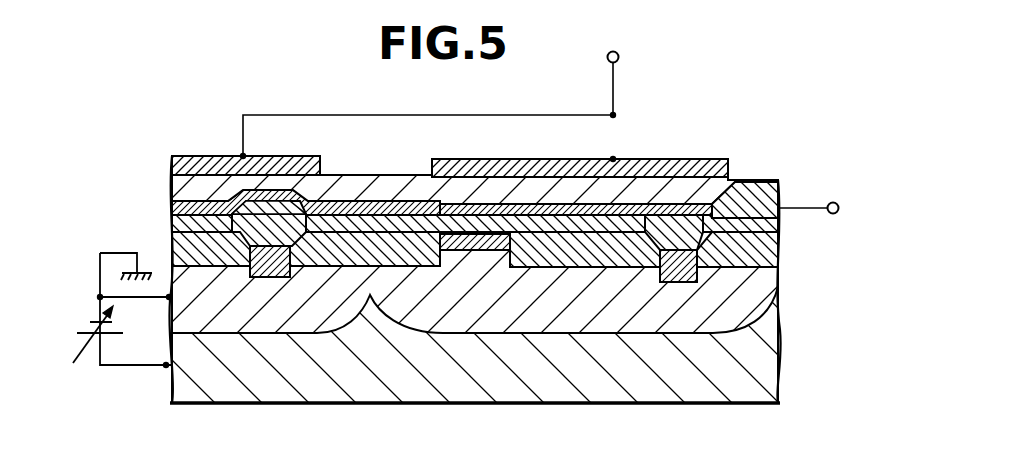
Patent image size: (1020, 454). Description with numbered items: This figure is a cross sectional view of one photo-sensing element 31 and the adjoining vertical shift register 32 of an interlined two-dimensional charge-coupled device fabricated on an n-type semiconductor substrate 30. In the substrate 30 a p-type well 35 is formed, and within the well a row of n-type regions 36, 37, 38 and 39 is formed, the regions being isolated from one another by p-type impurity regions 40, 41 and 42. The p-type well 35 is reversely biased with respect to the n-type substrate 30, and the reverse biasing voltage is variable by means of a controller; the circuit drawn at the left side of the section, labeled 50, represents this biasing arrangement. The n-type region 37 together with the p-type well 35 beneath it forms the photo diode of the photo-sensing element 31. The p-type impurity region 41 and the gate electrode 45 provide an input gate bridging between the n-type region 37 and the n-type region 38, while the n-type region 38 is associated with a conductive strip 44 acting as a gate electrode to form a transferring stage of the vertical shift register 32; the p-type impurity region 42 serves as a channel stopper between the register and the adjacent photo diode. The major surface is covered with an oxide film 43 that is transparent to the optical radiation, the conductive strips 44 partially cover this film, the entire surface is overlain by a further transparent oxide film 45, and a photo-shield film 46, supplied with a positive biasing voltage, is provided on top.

The n-type semiconductor substrate 30 is at (763, 370).
The photo-sensing element 31 is at (437, 403).
The vertical shift register 32 is at (663, 403).
The p-type well 35 is at (490, 322).
The n-type region 36 is at (214, 260).
The n-type region 37 is at (362, 254).
The n-type region 38 is at (573, 263).
The n-type region 39 is at (765, 262).
The p-type impurity region 40 is at (276, 278).
The p-type impurity region 41 is at (488, 250).
The p-type impurity region 42 is at (685, 282).
The oxide film 43 is at (172, 217).
The conductive strip 44 is at (740, 184).
The oxide film 45 is at (810, 176).
The photo-shield film 46 is at (318, 163).
The variable capacitor circuit 50 is at (90, 347).